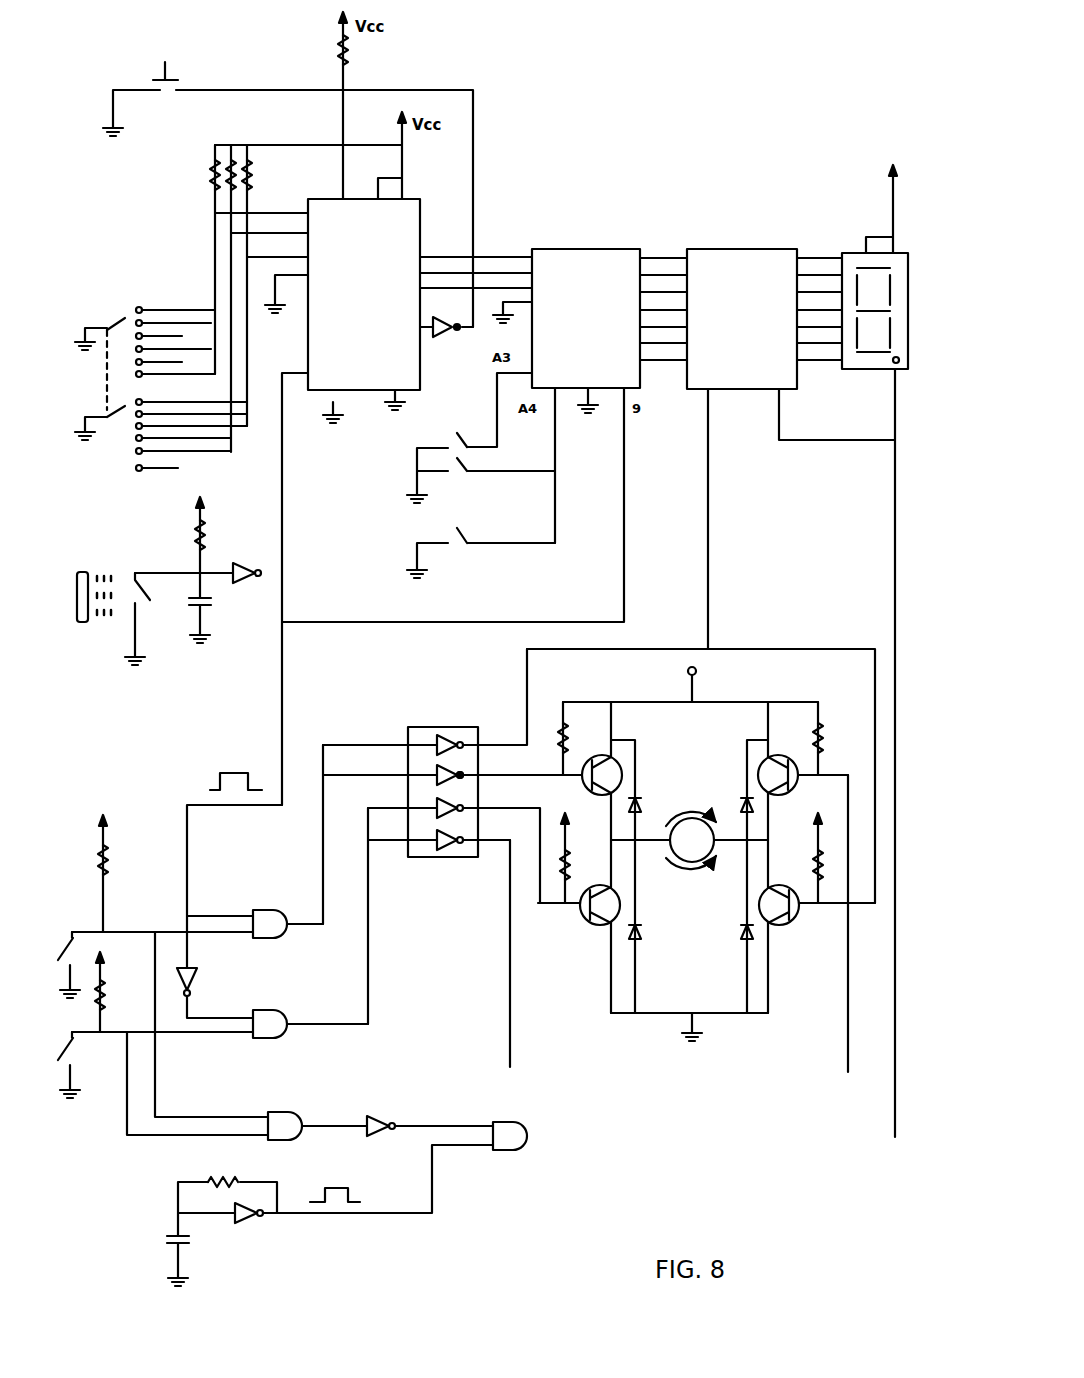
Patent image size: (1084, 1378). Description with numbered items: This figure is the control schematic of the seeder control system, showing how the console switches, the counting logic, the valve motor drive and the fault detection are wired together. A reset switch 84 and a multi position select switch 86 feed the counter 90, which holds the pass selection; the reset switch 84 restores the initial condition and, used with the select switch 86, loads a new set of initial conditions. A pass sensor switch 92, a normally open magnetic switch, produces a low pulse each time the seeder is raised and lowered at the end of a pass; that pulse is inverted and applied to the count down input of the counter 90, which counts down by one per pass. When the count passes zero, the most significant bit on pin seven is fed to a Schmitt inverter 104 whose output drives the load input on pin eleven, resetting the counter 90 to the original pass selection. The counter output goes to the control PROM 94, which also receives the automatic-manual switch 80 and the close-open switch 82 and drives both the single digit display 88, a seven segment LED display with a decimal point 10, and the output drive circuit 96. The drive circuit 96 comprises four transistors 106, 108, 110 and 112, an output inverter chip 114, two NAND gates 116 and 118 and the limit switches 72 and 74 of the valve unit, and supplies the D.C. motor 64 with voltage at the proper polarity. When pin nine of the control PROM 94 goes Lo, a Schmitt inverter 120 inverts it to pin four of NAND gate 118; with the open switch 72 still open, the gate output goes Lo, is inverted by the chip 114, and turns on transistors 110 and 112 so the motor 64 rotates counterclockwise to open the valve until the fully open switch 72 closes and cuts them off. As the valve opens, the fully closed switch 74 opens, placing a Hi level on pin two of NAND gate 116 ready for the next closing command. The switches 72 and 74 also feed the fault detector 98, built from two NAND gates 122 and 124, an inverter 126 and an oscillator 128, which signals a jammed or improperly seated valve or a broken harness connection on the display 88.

The indicator dot 10 is at (915, 362).
The motor 64 is at (672, 873).
The open switch 72 is at (52, 1082).
The fully closed switch 74 is at (57, 945).
The automatic-manual switch 80 is at (410, 468).
The close-open switch 82 is at (410, 544).
The reset switch 84 is at (150, 70).
The multi position select switch 86 is at (125, 290).
The single digit display 88 is at (847, 246).
The counter 90 is at (432, 205).
The pass sensor switch 92 is at (120, 640).
The control programmable read only memory (PROM) 94 is at (588, 244).
The output drive circuit 96 is at (701, 809).
The fault detector 98 is at (368, 1231).
The Schmitt inverter 104 is at (447, 342).
The transistor 106 is at (634, 742).
The transistor 108 is at (790, 925).
The transistor 110 is at (590, 930).
The transistor 112 is at (761, 757).
The output inverter chip 114 is at (432, 721).
The NAND gate 116 is at (270, 910).
The NAND gate 118 is at (275, 1032).
The Schmitt inverter 120 is at (198, 979).
The NAND gate 122 is at (292, 1112).
The NAND gate 124 is at (512, 1130).
The inverter 126 is at (380, 1118).
The oscillator 128 is at (252, 1228).